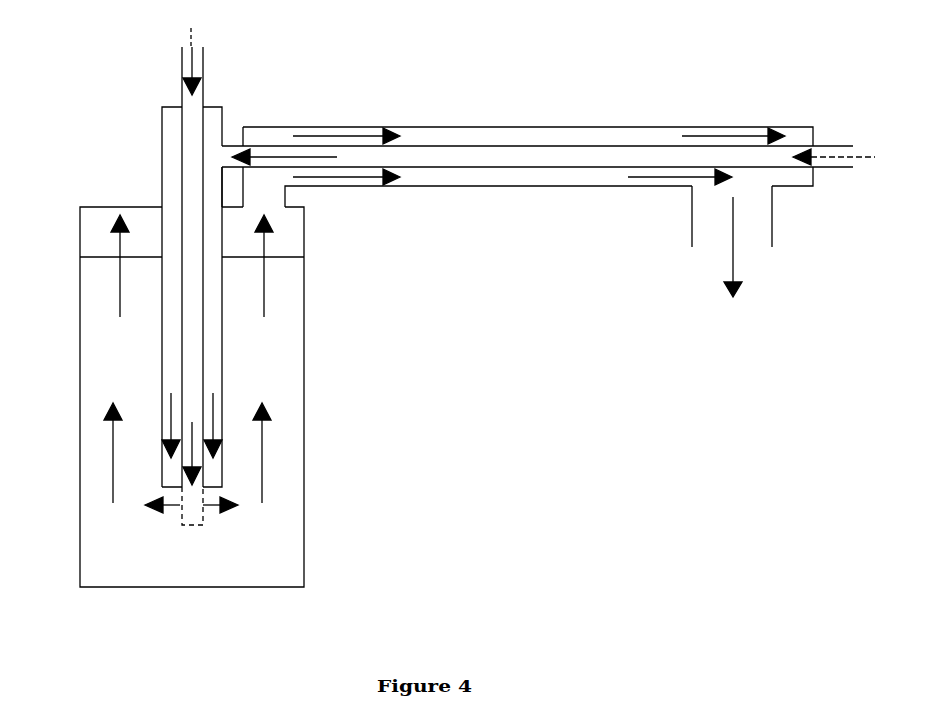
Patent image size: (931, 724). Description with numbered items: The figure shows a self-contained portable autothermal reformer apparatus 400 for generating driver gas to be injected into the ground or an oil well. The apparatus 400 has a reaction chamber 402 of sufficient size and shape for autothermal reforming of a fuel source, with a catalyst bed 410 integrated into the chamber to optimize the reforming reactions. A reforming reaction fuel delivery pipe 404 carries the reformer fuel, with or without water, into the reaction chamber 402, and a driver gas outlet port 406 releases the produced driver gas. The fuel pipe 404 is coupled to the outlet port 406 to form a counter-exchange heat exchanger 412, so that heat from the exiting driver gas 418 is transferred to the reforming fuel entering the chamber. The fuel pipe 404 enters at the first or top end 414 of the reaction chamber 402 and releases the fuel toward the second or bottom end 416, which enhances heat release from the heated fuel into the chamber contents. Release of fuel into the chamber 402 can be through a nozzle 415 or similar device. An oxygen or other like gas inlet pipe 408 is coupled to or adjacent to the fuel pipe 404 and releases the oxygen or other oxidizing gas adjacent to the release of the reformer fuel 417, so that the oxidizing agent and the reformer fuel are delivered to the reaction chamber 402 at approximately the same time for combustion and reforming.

The autothermal reformer apparatus 400 is at (438, 23).
The reaction chamber 402 is at (285, 325).
The reforming reaction fuel delivery pipe 404 is at (208, 143).
The driver gas outlet port 406 is at (747, 197).
The oxygen or other like gas inlet pipe 408 is at (205, 256).
The catalyst bed 410 is at (262, 284).
The counter-exchange heat exchanger 412 is at (392, 128).
The first or top end 414 is at (148, 220).
The nozzle 415 is at (182, 515).
The second or bottom end 416 is at (285, 563).
The release of the reformer fuel 417 is at (163, 475).
The exiting driver gas 418 is at (737, 260).